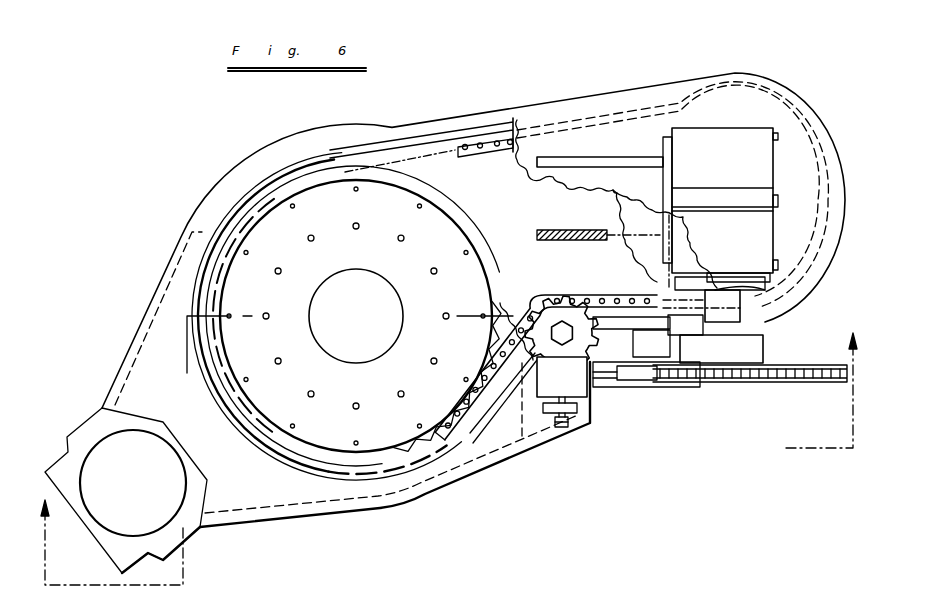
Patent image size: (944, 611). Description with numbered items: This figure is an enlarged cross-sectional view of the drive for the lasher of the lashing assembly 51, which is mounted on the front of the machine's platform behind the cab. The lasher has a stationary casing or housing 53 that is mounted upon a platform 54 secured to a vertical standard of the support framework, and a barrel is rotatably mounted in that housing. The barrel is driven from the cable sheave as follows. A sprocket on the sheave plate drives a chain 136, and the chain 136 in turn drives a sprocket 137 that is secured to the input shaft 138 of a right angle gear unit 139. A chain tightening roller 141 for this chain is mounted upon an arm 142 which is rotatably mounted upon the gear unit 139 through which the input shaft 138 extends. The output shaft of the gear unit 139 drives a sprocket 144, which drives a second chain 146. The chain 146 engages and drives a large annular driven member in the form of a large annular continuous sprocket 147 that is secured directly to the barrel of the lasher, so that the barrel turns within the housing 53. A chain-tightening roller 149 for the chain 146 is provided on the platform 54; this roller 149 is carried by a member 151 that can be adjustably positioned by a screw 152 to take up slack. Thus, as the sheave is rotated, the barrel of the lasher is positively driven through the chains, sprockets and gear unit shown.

The lashing assembly 51 is at (363, 522).
The stationary casing or housing 53 is at (360, 392).
The platform 54 is at (257, 491).
The chain 136 is at (810, 382).
The sprocket 137 is at (731, 358).
The input shaft 138 is at (740, 328).
The right angle gear unit 139 is at (780, 157).
The chain tightening roller 141 is at (637, 376).
The arm 142 is at (645, 335).
The sprocket 144 is at (643, 248).
The chain 146 is at (571, 294).
The large annular continuous sprocket 147 is at (507, 318).
The chain-tightening roller 149 is at (578, 300).
The member 151 is at (545, 380).
The screw 152 is at (574, 426).